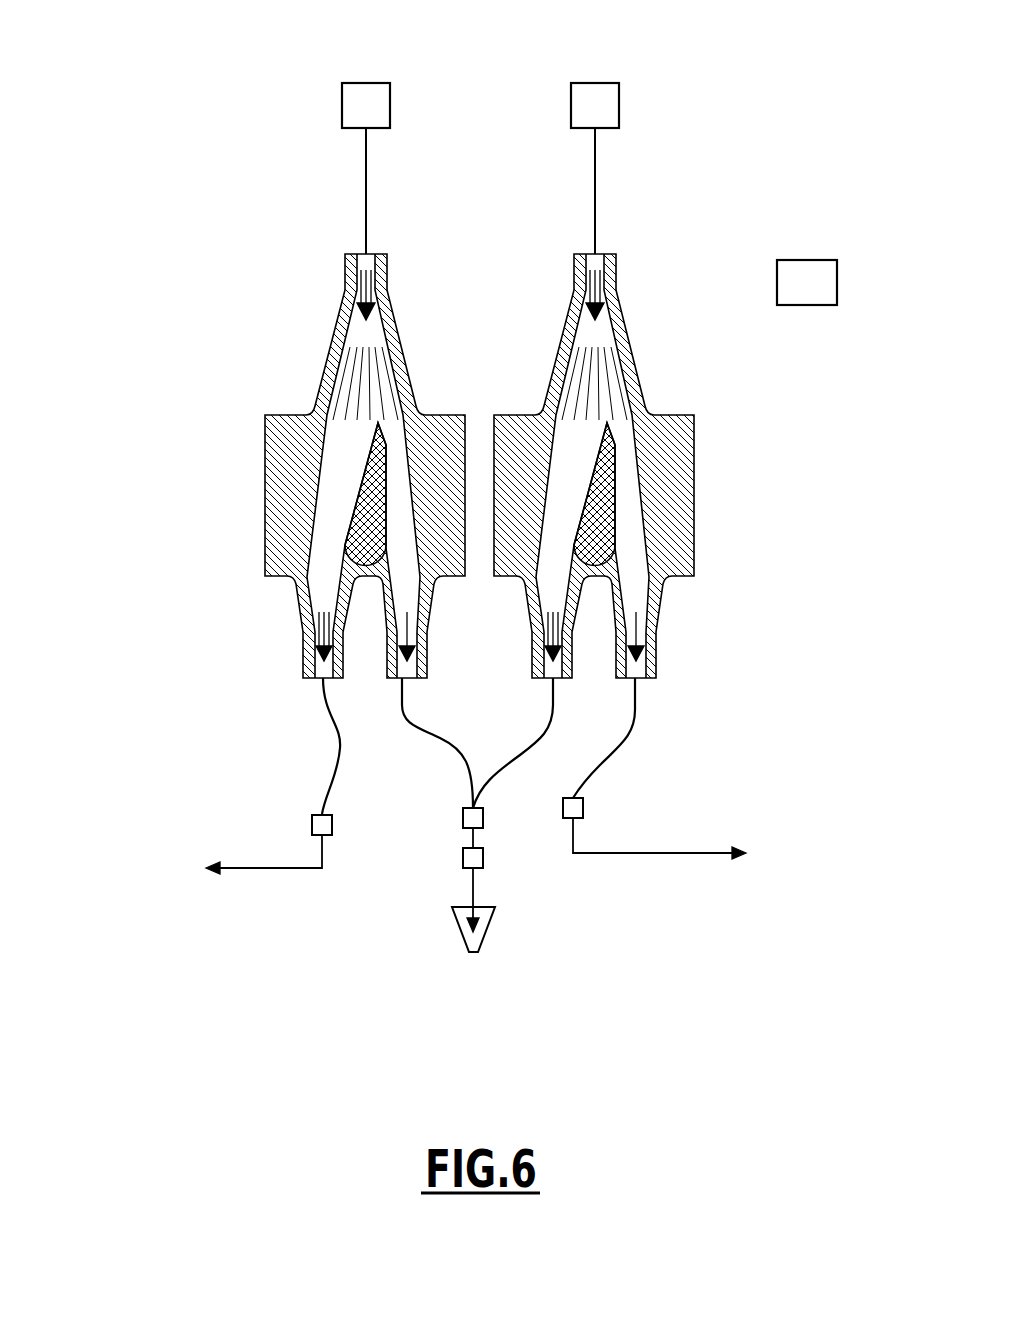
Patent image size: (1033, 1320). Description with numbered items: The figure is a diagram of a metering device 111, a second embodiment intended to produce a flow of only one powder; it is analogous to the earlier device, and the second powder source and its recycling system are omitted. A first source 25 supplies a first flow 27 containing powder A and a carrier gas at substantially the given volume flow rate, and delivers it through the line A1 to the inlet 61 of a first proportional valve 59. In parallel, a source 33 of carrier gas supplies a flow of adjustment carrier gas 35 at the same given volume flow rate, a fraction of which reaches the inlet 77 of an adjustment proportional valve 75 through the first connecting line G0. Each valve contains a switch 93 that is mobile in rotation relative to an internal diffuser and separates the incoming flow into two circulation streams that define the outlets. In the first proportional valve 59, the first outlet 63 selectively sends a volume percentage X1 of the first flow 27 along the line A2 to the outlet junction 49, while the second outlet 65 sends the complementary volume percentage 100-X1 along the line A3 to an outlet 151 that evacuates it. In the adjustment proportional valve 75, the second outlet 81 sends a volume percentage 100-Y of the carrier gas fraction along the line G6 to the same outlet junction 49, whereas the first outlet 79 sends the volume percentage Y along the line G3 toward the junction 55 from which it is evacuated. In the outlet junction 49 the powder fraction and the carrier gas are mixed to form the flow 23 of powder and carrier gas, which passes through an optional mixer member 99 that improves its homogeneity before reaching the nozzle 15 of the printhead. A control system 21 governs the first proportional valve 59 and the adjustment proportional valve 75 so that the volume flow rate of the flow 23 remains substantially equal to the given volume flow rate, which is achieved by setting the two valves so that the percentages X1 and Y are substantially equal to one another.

The device 111 is at (178, 101).
The control system 21 is at (807, 282).
The first source 25 is at (390, 102).
The first flow 27 is at (366, 160).
The line A1 is at (366, 225).
The source of carrier gas 33 is at (619, 102).
The flow of adjustment carrier gas 35 is at (595, 160).
The first connecting line G0 is at (595, 225).
The first proportional valve 59 is at (262, 466).
The adjustment proportional valve 75 is at (637, 479).
The inlet 61 is at (356, 254).
The inlet 77 is at (585, 254).
The switch 93 is at (377, 480).
The second outlet 65 is at (313, 678).
The first outlet 63 is at (418, 678).
The second outlet 81 is at (565, 678).
The first outlet 79 is at (650, 678).
The volume percentage 100−X1 100-X1 is at (312, 630).
The volume percentage X1 is at (396, 632).
The volume percentage 100−Y 100-Y is at (545, 632).
The volume percentage Y is at (655, 630).
The line A3 is at (337, 743).
The line A2 is at (466, 765).
The line G6 is at (548, 718).
The line G3 is at (631, 722).
The outlet 151 is at (312, 825).
The flow of powders and carrier gas 23 is at (478, 848).
The outlet junction 49 is at (485, 818).
The mixer member 99 is at (485, 858).
The second recycling junction 55 is at (585, 808).
The nozzle 15 is at (487, 930).